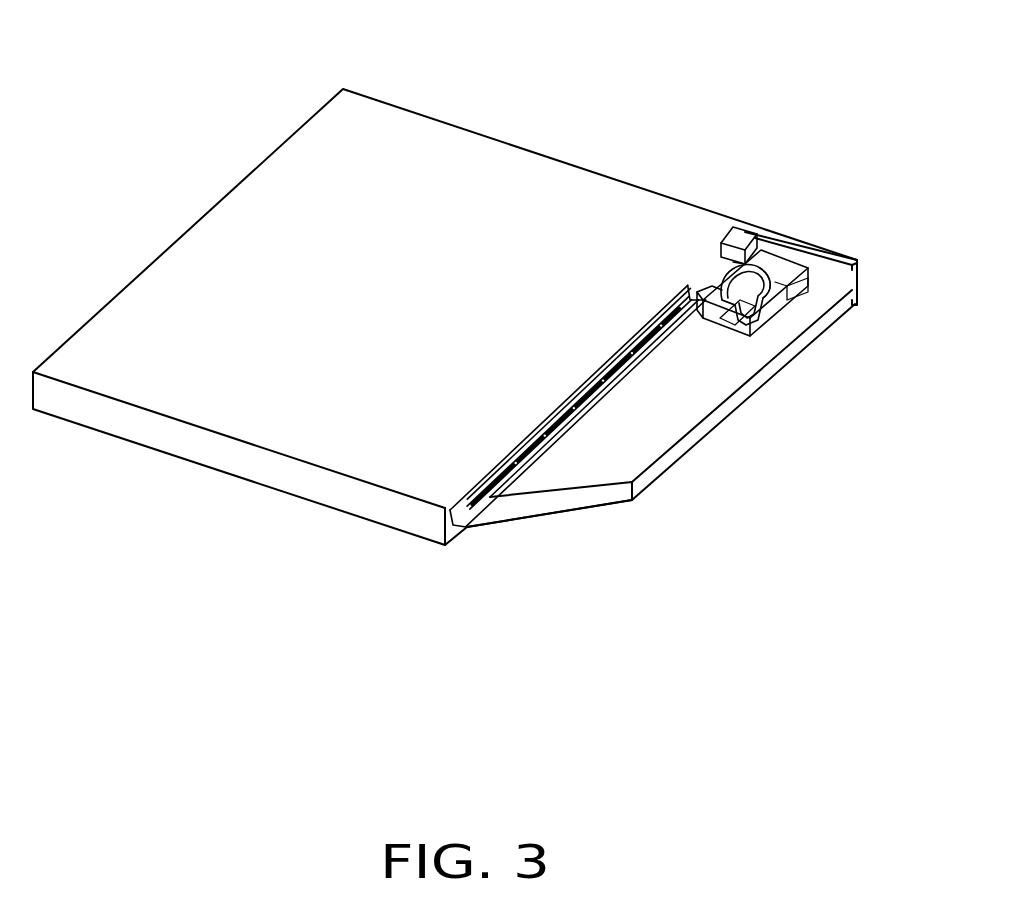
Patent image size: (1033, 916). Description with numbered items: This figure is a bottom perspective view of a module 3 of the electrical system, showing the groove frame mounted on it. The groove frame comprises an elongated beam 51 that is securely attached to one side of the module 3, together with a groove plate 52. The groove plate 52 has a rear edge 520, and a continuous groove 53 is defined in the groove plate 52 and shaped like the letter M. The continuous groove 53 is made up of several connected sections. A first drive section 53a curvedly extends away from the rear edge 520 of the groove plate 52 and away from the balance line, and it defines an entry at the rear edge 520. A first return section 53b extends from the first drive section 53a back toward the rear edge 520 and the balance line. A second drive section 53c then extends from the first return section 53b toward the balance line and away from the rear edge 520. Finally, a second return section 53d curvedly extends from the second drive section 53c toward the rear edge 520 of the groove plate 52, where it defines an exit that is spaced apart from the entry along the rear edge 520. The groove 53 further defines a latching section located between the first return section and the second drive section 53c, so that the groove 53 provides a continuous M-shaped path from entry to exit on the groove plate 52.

The module 3 is at (403, 132).
The elongated beam 51 is at (597, 390).
The groove plate 52 is at (790, 282).
The rear edge 520 is at (725, 320).
The continuous groove 53 is at (793, 210).
The first drive section 53a is at (728, 295).
The first return section 53b is at (737, 262).
The second drive section 53c is at (772, 262).
The second return section 53d is at (805, 292).